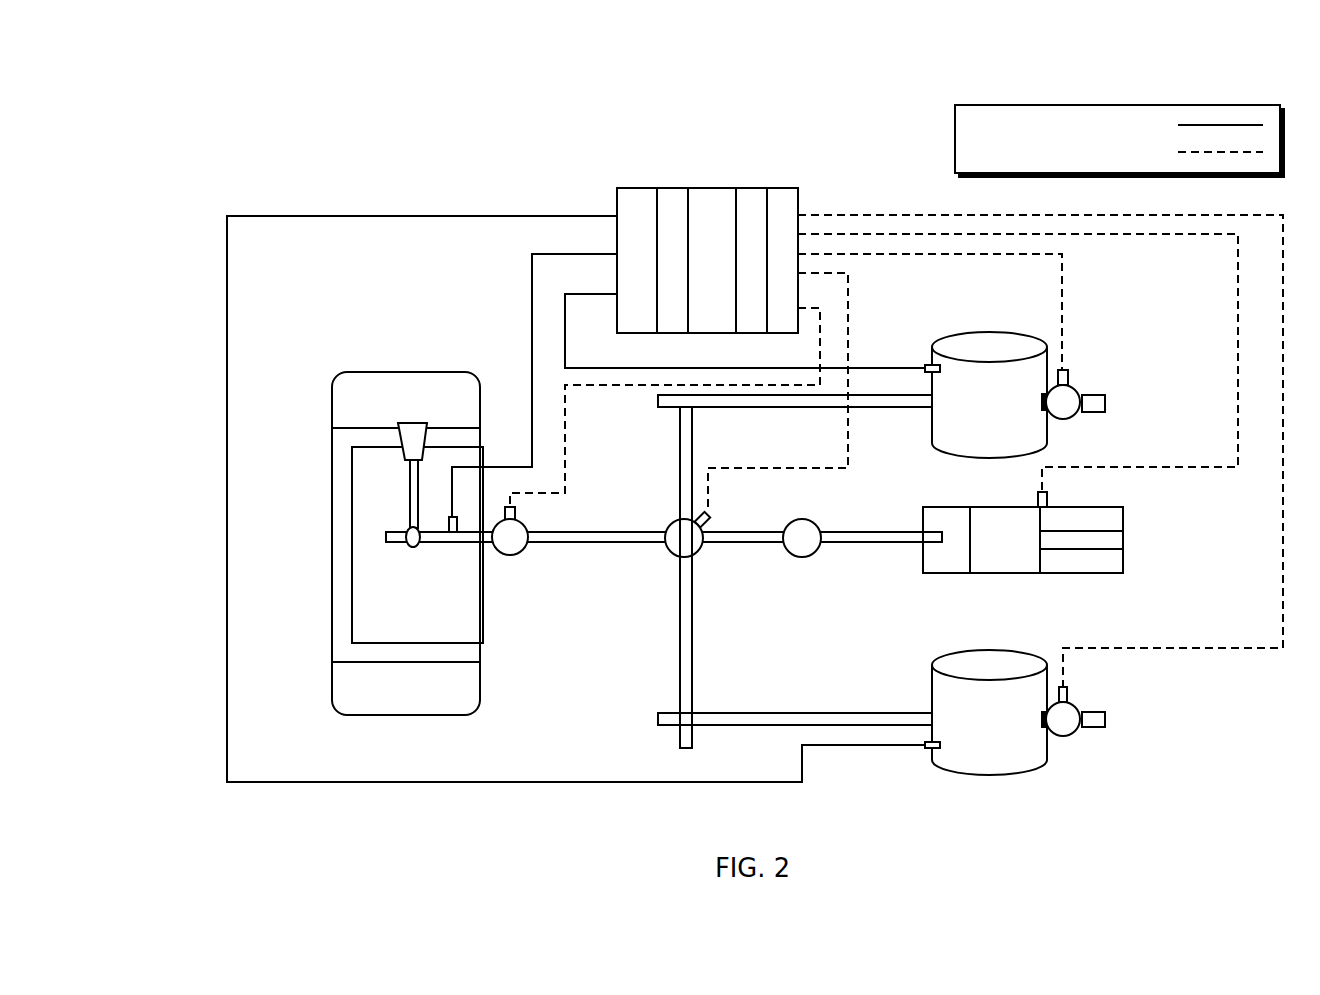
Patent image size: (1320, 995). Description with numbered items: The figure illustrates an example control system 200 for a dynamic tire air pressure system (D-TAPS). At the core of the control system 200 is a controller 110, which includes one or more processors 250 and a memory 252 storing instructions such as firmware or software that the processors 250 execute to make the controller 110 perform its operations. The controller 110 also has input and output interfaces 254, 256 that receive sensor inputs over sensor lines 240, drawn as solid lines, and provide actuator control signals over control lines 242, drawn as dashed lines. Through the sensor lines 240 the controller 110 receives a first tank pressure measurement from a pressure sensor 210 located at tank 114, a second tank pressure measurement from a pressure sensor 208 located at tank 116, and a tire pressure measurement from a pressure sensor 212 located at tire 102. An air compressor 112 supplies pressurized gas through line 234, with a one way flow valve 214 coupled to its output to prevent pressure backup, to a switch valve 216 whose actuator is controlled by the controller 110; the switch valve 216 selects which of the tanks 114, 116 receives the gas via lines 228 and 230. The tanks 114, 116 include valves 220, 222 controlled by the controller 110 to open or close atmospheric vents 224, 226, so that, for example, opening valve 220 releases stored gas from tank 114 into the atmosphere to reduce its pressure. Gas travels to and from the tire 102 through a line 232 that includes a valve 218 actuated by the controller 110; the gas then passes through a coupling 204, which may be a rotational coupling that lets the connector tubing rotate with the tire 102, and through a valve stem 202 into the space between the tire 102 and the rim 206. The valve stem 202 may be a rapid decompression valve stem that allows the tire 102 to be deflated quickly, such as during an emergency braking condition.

The control system 200 is at (383, 98).
The controller 110 is at (712, 188).
The processors 250 is at (673, 188).
The memory 252 is at (752, 188).
The input and output (I/O) interface 254 is at (637, 188).
The input and output (I/O) interface 256 is at (835, 172).
The sensor lines 240 is at (745, 448).
The control lines 242 is at (896, 414).
The tire 102 is at (405, 370).
The valve stem 202 is at (398, 455).
The coupling 204 is at (403, 551).
The rim 206 is at (333, 512).
The pressure sensor 212 is at (458, 523).
The valve 218 is at (527, 550).
The line 232 is at (600, 543).
The switch valve 216 is at (700, 545).
The one way flow valve 214 is at (802, 557).
The line 234 is at (860, 543).
The line 228 is at (780, 408).
The line 230 is at (808, 712).
The pressure sensor 210 is at (927, 365).
The tank 114 is at (967, 458).
The valve 220 is at (1070, 420).
The atmospheric vent 224 is at (1105, 403).
The air compressor 112 is at (1103, 573).
The tank 116 is at (982, 777).
The pressure sensor 208 is at (930, 750).
The valve 222 is at (1073, 737).
The atmospheric vent 226 is at (1105, 718).